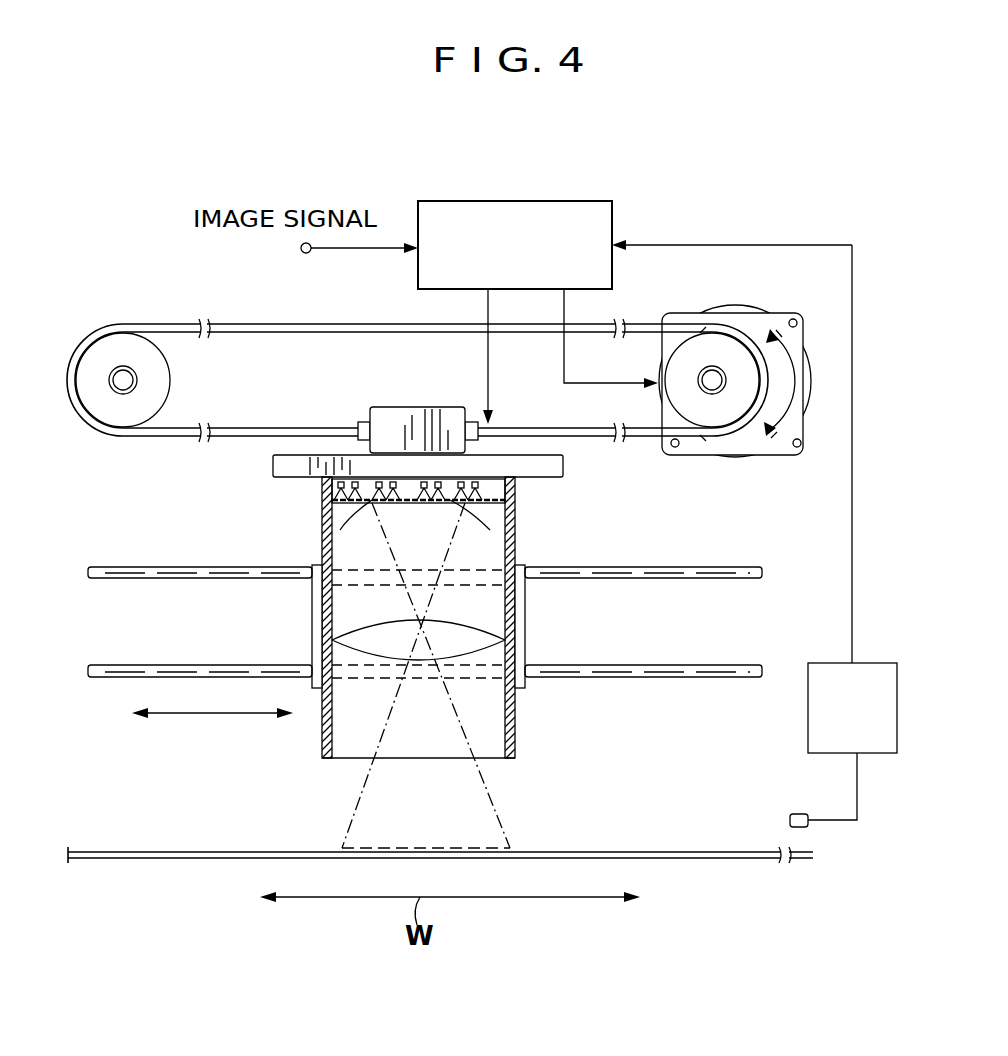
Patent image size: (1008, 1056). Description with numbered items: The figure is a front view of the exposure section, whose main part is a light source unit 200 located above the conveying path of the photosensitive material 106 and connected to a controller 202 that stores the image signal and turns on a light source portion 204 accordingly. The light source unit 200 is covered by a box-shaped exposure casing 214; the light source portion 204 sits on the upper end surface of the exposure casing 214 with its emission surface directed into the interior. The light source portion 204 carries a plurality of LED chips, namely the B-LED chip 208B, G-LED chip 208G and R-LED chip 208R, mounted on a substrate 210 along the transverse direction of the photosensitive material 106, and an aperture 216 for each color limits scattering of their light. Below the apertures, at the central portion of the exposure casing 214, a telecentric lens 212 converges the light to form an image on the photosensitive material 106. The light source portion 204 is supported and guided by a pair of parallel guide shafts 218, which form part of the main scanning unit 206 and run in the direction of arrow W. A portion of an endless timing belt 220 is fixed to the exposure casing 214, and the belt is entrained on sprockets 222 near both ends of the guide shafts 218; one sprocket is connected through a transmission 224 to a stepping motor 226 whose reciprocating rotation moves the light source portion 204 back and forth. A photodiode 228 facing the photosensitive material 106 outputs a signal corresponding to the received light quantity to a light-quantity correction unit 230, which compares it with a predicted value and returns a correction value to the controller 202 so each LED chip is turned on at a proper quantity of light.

The photosensitive material 106 is at (690, 850).
The light source unit 200 is at (442, 660).
The controller 202 is at (612, 223).
The light source portion 204 is at (322, 497).
The main scanning unit 206 is at (147, 457).
The R-LED chip 208R is at (340, 493).
The G-LED chip 208G is at (416, 503).
The B-LED chip 208B is at (476, 492).
The substrate 210 is at (515, 490).
The telecentric lens 212 is at (375, 648).
The exposure casing 214 is at (515, 717).
The aperture 216 is at (332, 512).
The guide shafts 218 is at (655, 580).
The timing belt 220 is at (305, 425).
The sprockets 222 is at (172, 380).
The transmission 224 is at (762, 445).
The stepping motor 226 is at (735, 460).
The photodiode 228 is at (808, 822).
The light-quantity correction unit 230 is at (835, 753).